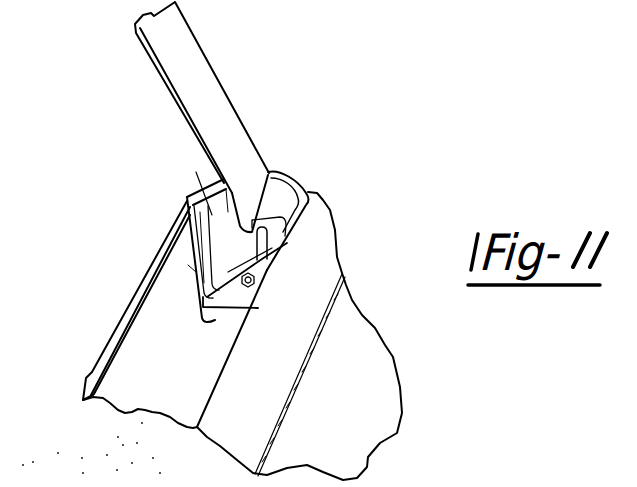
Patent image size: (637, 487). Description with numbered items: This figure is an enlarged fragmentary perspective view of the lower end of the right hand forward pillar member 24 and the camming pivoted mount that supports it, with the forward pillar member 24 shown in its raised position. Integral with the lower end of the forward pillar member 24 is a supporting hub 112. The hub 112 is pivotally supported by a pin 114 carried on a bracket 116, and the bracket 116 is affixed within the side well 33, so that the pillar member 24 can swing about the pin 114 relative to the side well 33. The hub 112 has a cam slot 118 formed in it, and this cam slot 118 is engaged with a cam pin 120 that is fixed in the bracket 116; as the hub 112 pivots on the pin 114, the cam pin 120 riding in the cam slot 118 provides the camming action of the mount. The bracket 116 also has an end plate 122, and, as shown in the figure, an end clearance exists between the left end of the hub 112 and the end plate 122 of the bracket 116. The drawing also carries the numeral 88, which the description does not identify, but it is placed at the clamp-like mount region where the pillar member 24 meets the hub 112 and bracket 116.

The forward pillar member 24 is at (201, 50).
The side well 33 is at (140, 344).
The bracket / channel 88 is at (300, 132).
The supporting hub 112 is at (228, 253).
The pin 114 is at (221, 243).
The bracket 116 is at (226, 315).
The cam slot 118 is at (263, 240).
The cam pin 120 is at (268, 259).
The end plate 122 is at (192, 271).